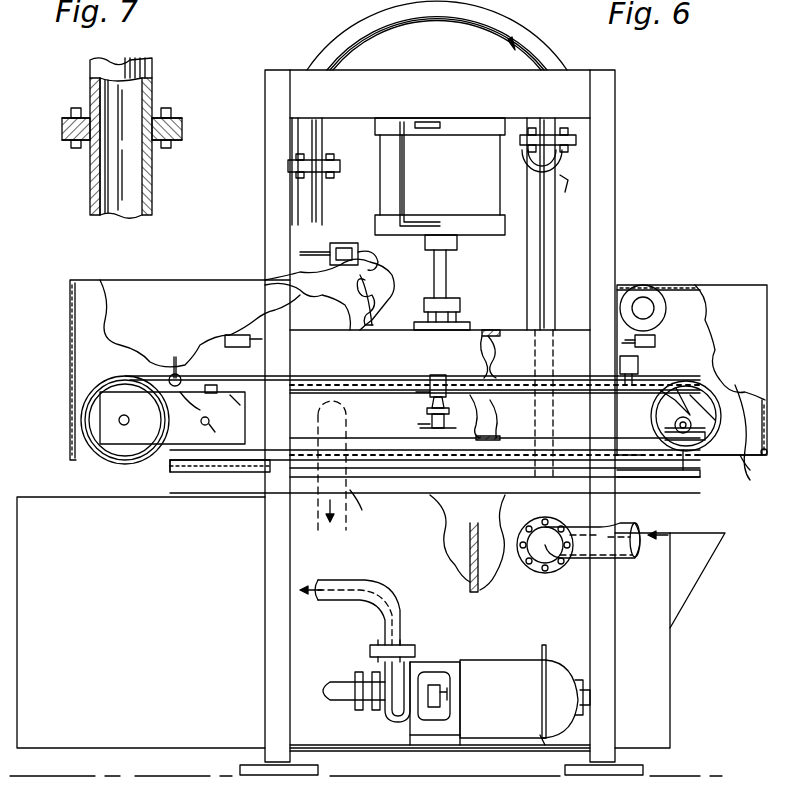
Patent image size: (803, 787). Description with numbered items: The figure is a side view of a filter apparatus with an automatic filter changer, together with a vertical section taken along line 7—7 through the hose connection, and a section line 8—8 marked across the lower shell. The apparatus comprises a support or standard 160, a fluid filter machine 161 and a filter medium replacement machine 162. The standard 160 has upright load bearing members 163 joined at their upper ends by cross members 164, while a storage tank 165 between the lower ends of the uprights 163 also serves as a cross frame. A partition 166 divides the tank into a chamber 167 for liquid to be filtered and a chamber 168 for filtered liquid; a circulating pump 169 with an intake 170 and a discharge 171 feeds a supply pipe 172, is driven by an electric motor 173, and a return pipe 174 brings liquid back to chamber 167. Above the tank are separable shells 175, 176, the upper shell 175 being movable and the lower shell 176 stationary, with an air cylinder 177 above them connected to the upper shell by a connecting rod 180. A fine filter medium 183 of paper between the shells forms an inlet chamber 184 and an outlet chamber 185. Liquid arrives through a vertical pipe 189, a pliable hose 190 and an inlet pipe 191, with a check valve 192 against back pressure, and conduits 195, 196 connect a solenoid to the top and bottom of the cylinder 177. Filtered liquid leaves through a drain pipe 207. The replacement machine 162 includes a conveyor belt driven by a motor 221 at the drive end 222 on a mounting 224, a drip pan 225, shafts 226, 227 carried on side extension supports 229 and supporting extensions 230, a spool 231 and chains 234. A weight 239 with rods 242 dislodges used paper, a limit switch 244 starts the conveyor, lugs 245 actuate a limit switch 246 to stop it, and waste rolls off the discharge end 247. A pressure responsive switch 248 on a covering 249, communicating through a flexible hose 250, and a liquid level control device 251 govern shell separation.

In FIG. 6, the section line 7— 7 is at (300, 137).
In FIG. 6, the section line 8— 8 is at (655, 405).
In FIG. 6, the support or standard 160 is at (615, 155).
In FIG. 6, the fluid filter machine 161 is at (485, 315).
In FIG. 6, the filter medium replacement machine 162 is at (675, 285).
In FIG. 6, the upright load bearing members 163 is at (265, 160).
In FIG. 6, the cross members 164 is at (568, 70).
In FIG. 6, the storage tank 165 is at (183, 730).
In FIG. 6, the partition 166 is at (450, 500).
In FIG. 6, the chamber for liquid to be filtered 167 is at (485, 570).
In FIG. 6, the chamber for filtered liquid 168 is at (447, 555).
In FIG. 6, the circulating pump 169 is at (385, 715).
In FIG. 6, the intake 170 is at (345, 668).
In FIG. 6, the discharge 171 is at (399, 681).
In FIG. 6, the supply pipe 172 is at (345, 600).
In FIG. 6, the electric motor 173 is at (522, 655).
In FIG. 6, the return pipe 174 is at (625, 560).
In FIG. 6, the upper shell 175 is at (412, 369).
In FIG. 6, the lower shell 176 is at (435, 448).
In FIG. 6, the air cylinder 177 is at (440, 176).
In FIG. 6, the connecting rod 180 is at (446, 265).
In FIG. 6, the fine filter medium 183 is at (150, 372).
In FIG. 6, the inlet chamber 184 is at (501, 344).
In FIG. 6, the outlet chamber 185 is at (492, 395).
In FIG. 6, the vertical pipe 189 is at (548, 295).
In FIG. 7, the pliable fluid conductor or hose 190 is at (152, 92).
In FIG. 6, the pliable fluid conductor or hose 190 is at (452, 12).
In FIG. 7, the inlet pipe 191 is at (152, 188).
In FIG. 6, the inlet pipe 191 is at (292, 212).
In FIG. 6, the check valve 192 is at (557, 182).
In FIG. 6, the conduit 195 is at (430, 122).
In FIG. 6, the conduit 196 is at (400, 122).
In FIG. 6, the drain pipe 207 is at (360, 465).
In FIG. 6, the conveyor driving motor 221 is at (666, 310).
In FIG. 6, the feed or drive end 222 is at (690, 400).
In FIG. 6, the mounting 224 is at (655, 338).
In FIG. 6, the drip pan 225 is at (665, 480).
In FIG. 6, the horizontal shaft 226 is at (700, 438).
In FIG. 6, the horizontal shaft 227 is at (226, 432).
In FIG. 6, the side extension supports 229 is at (704, 469).
In FIG. 6, the supporting extensions 230 is at (152, 446).
In FIG. 6, the spool 231 is at (705, 395).
In FIG. 6, the endless chains 234 is at (225, 472).
In FIG. 6, the restrainer or weight 239 is at (181, 378).
In FIG. 6, the rods 242 is at (176, 357).
In FIG. 6, the limit switch 244 is at (240, 335).
In FIG. 6, the operating members or lugs 245 is at (244, 402).
In FIG. 6, the limit switch 246 is at (620, 366).
In FIG. 6, the discharge end 247 is at (762, 473).
In FIG. 6, the pressure responsive switch 248 is at (338, 265).
In FIG. 6, the sheet metal covering 249 is at (270, 262).
In FIG. 6, the flexible conduit or hose 250 is at (305, 325).
In FIG. 6, the liquid level control device 251 is at (448, 362).